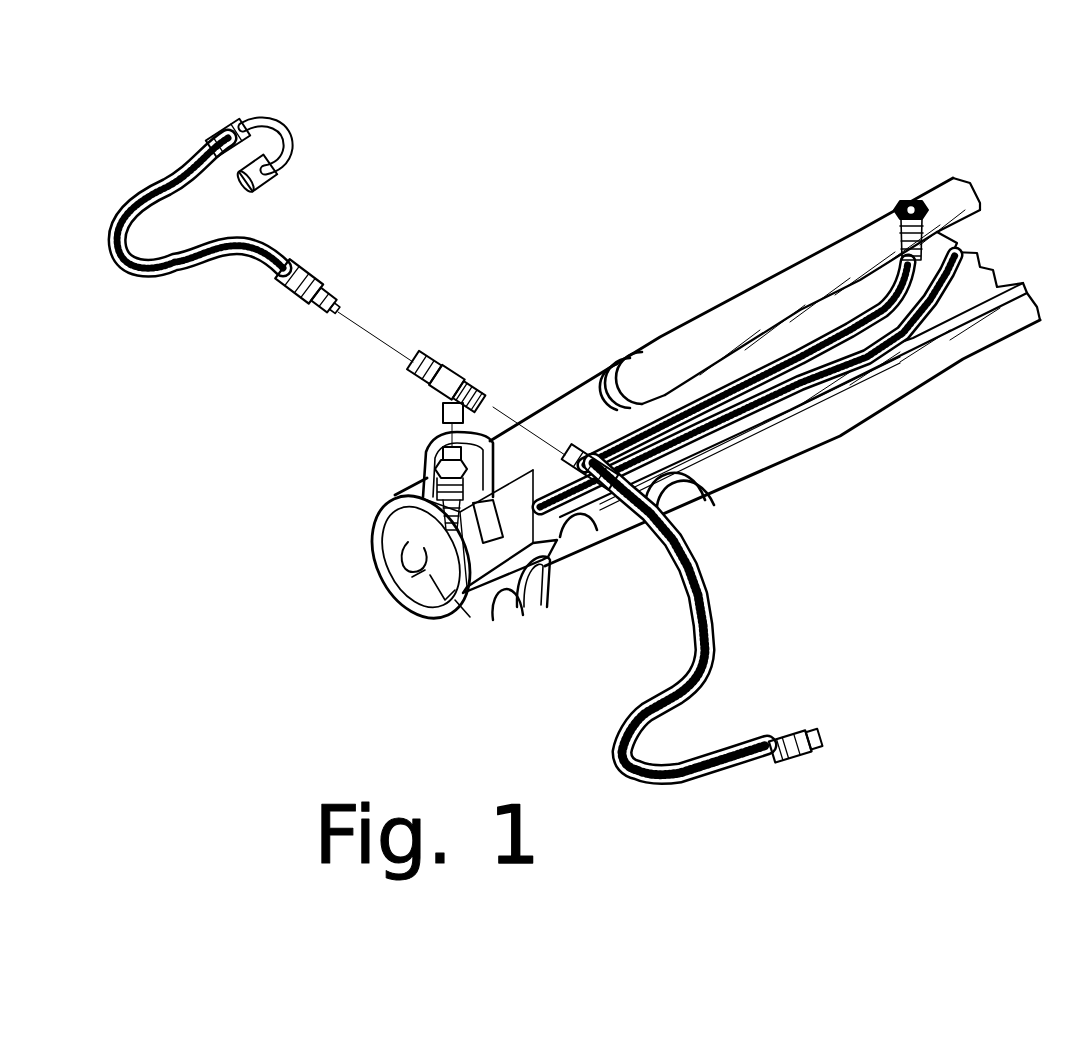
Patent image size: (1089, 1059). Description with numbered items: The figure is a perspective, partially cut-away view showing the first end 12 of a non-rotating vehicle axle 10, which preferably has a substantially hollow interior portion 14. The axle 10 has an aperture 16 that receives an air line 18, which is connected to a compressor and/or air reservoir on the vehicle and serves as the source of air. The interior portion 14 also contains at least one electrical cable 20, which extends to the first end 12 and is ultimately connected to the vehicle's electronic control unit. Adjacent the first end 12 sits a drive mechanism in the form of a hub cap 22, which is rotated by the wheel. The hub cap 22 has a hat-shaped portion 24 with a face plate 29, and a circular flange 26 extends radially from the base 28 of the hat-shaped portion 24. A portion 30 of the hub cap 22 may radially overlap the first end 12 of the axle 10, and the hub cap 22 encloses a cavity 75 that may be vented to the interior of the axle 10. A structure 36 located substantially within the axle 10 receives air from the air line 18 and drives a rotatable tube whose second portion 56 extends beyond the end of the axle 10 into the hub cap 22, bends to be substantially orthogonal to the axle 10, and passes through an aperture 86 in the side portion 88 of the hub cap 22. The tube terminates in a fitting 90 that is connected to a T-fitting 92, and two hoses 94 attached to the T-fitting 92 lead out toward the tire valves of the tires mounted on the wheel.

The non-rotating axle 10 is at (683, 183).
The first end 12 is at (553, 347).
The hollow interior portion 14 is at (880, 283).
The aperture 16 is at (937, 232).
The air line 18 is at (780, 360).
The electrical cable 20 is at (917, 340).
The hub cap 22 is at (380, 527).
The hat-shaped portion 24 is at (390, 483).
The circular flange 26 is at (423, 443).
The base 28 is at (512, 600).
The face plate 29 is at (410, 577).
The portion of the hub cap 30 is at (550, 577).
The structure 36 is at (517, 532).
The second portion of the shaft 56 is at (440, 565).
The cavity 75 is at (455, 600).
The aperture 86 is at (397, 557).
The side portion 88 is at (470, 620).
The fitting 90 is at (507, 460).
The T-fitting 92 is at (460, 370).
The hoses 94 is at (267, 253).